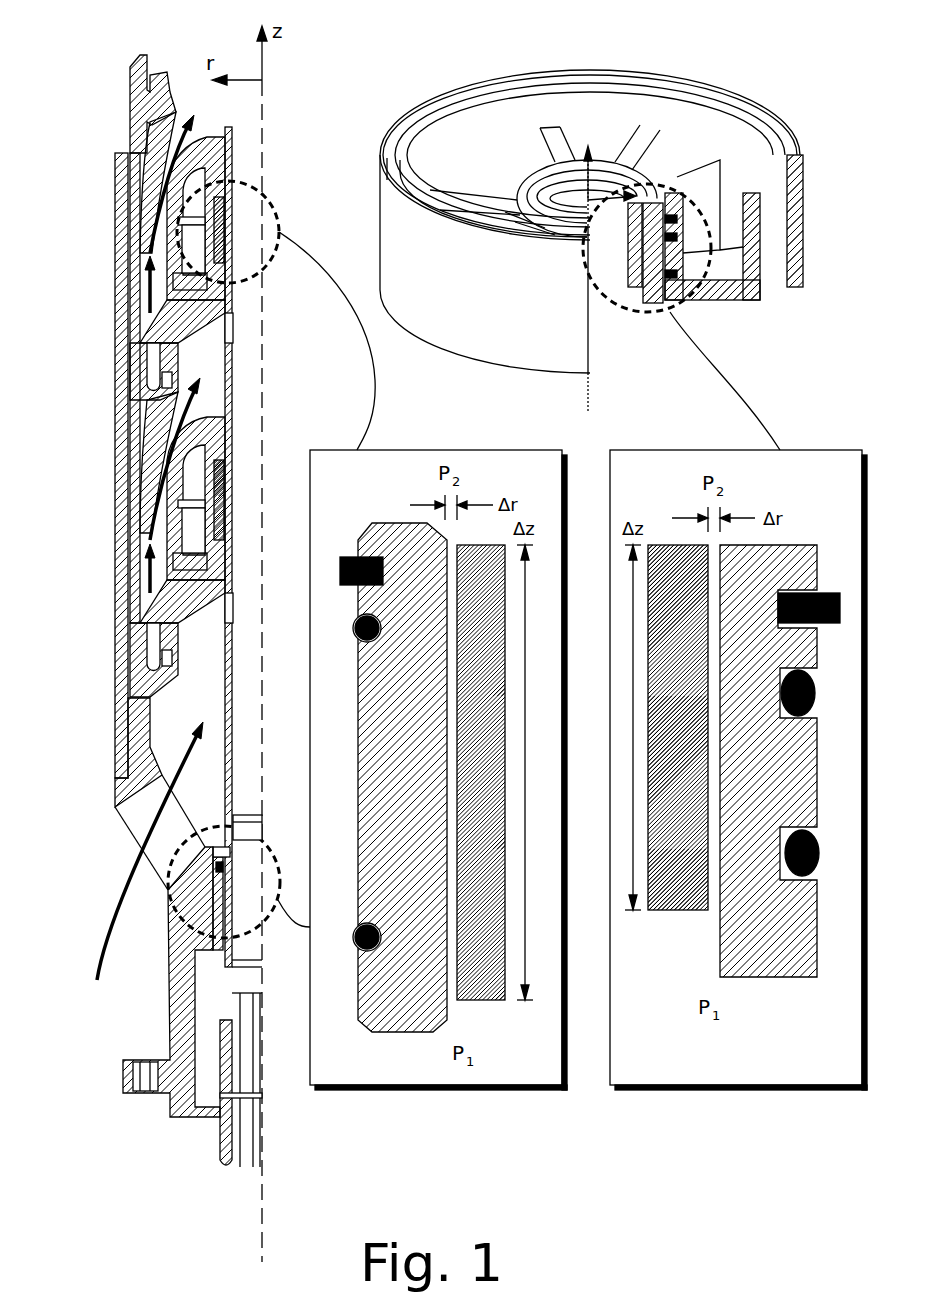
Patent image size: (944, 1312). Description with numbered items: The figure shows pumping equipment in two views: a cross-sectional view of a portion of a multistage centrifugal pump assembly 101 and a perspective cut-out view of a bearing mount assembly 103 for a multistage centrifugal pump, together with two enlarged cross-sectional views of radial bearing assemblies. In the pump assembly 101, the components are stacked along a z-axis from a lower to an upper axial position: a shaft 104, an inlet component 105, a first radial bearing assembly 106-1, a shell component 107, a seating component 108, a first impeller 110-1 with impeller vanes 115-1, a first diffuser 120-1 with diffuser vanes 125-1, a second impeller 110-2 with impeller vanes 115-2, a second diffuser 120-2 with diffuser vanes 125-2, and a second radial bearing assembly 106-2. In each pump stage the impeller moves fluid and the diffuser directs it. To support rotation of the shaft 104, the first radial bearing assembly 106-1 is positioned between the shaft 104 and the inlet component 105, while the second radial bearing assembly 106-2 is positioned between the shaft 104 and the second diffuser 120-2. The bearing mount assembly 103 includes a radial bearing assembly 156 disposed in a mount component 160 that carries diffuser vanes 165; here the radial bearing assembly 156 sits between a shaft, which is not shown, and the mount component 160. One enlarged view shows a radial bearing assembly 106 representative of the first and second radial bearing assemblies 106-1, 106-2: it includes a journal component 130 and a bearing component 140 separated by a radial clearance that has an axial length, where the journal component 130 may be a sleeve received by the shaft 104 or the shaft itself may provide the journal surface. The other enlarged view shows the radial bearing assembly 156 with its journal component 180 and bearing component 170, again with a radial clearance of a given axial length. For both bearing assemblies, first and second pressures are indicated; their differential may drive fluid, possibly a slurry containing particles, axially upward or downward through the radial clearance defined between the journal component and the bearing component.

The multistage centrifugal pump assembly 101 is at (308, 60).
The bearing mount assembly 103 is at (716, 62).
The shaft 104 is at (248, 1165).
The inlet component 105 is at (170, 977).
The radial bearing assembly 106 is at (366, 486).
The first radial bearing assembly 106-1 is at (197, 933).
The second radial bearing assembly 106-2 is at (267, 200).
The shell component 107 is at (115, 752).
The seating component 108 is at (127, 713).
The first impeller 110-1 is at (227, 590).
The second impeller 110-2 is at (230, 314).
The impeller vanes 115-1 is at (230, 640).
The impeller vanes 115-2 is at (232, 363).
The first diffuser 120-1 is at (127, 407).
The second diffuser 120-2 is at (132, 100).
The diffuser vanes 125-1 is at (147, 477).
The diffuser vanes 125-2 is at (163, 152).
The journal component 130 is at (483, 1002).
The bearing component 140 is at (403, 1033).
The radial bearing assembly 156 is at (647, 313).
The mount component 160 is at (733, 300).
The diffuser vanes 165 is at (770, 277).
The bearing component 170 is at (763, 977).
The journal component 180 is at (683, 913).